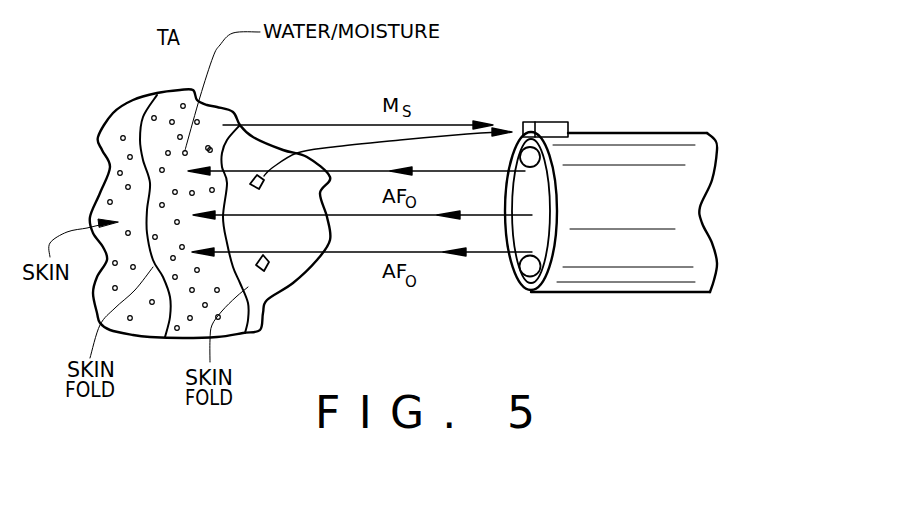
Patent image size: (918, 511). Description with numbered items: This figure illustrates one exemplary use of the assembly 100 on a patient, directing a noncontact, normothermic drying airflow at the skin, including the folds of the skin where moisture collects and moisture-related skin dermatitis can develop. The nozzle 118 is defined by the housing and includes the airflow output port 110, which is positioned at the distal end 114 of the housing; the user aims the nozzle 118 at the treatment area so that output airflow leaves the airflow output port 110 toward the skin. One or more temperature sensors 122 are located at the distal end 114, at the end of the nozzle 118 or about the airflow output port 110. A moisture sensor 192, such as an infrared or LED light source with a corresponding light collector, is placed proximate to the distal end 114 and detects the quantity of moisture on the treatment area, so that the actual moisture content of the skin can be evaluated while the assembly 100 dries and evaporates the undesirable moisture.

The assembly 100 is at (745, 82).
The airflow output port 110 is at (512, 258).
The distal end 114 is at (543, 293).
The nozzle 118 is at (627, 130).
The temperature sensors 122 is at (520, 132).
The moisture sensor 192 is at (547, 120).